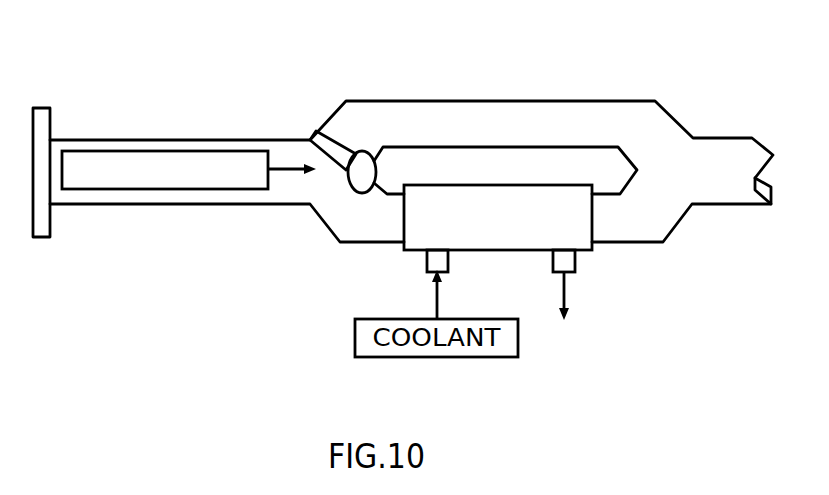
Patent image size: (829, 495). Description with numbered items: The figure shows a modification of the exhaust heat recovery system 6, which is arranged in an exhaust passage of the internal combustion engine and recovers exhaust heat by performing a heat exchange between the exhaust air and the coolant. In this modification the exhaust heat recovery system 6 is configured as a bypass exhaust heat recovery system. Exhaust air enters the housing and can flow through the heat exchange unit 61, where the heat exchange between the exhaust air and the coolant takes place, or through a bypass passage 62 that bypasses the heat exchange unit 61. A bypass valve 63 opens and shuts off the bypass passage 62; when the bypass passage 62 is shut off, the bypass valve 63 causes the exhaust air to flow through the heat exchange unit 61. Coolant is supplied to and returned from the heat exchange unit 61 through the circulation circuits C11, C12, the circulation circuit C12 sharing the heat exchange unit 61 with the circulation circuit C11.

The exhaust heat recovery system 6 is at (275, 85).
The heat exchange unit 61 is at (500, 185).
The bypass passage 62 is at (417, 101).
The bypass valve 63 is at (364, 151).
The circulation circuit C11 is at (418, 262).
The circulation circuit C12 is at (564, 285).